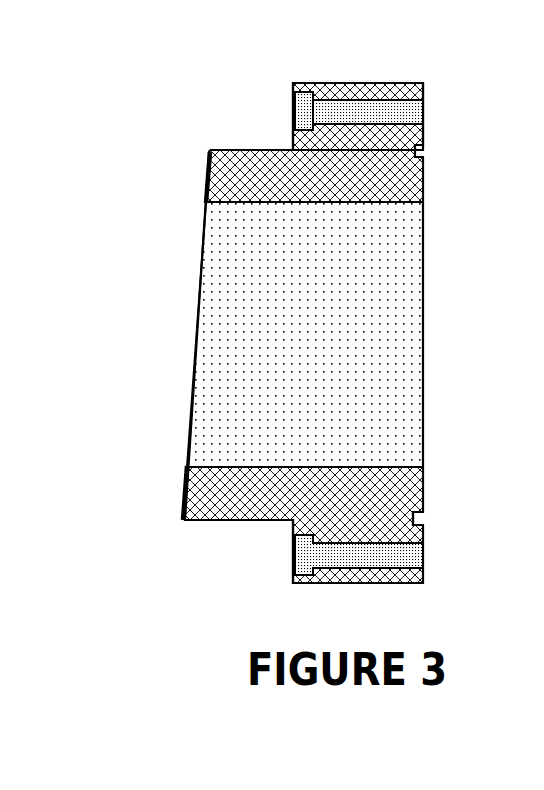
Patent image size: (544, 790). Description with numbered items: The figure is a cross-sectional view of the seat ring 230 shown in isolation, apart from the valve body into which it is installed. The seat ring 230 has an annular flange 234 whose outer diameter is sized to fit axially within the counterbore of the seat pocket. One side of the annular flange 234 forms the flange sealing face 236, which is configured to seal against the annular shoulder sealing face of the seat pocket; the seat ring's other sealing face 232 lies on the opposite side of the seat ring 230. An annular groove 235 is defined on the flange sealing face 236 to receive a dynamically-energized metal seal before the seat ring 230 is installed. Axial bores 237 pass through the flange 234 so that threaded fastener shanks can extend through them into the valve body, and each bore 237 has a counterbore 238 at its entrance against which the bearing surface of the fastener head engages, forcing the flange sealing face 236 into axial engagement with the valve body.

The seat ring 230 is at (253, 521).
The sealing face 232 is at (183, 494).
The annular flange 234 is at (371, 83).
The annular groove 235 is at (417, 518).
The flange sealing face 236 is at (423, 182).
The axial bore 237 is at (410, 113).
The counterbore 238 is at (302, 123).